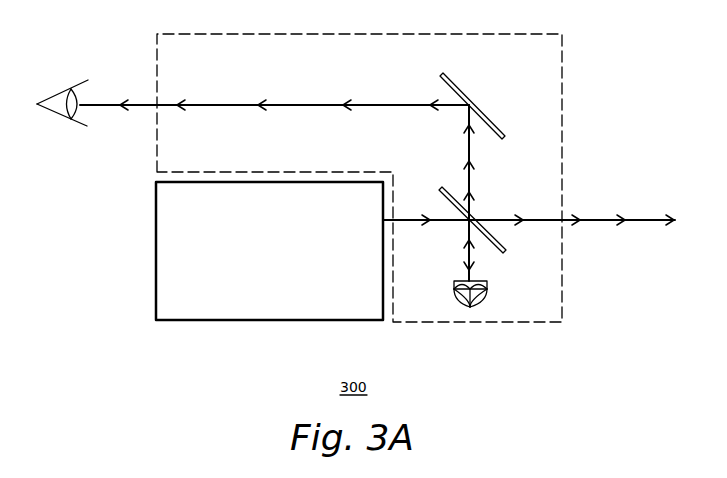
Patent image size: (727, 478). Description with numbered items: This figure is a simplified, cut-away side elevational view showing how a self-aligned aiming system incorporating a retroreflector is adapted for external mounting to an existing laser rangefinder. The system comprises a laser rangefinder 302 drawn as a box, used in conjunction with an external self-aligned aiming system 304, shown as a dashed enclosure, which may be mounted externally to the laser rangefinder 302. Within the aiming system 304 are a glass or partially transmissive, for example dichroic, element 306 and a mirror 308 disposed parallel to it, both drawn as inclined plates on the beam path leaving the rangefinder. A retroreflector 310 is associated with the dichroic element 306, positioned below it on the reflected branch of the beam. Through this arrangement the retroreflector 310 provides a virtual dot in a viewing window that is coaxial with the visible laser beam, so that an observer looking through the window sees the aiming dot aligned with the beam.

The laser rangefinder 302 is at (156, 288).
The external self-aligned aiming system 304 is at (562, 68).
The partially transmissive element 306 is at (500, 245).
The mirror 308 is at (496, 125).
The retroreflector 310 is at (488, 292).